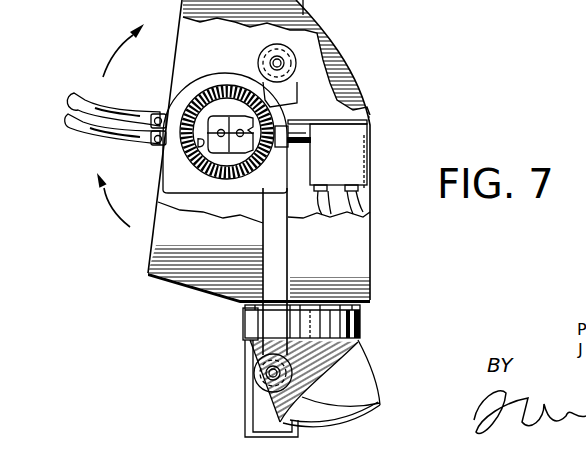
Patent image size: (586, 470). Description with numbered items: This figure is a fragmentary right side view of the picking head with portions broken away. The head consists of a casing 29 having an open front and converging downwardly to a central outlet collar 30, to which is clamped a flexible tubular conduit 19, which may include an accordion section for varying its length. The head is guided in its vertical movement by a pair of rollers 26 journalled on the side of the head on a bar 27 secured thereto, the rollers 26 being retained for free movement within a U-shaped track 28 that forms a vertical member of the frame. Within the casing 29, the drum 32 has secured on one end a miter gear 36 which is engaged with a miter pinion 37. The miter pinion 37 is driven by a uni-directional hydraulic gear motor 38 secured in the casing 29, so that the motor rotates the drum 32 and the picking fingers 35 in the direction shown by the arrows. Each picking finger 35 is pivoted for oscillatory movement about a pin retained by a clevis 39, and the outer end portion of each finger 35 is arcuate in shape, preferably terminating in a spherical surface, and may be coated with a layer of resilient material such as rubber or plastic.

The flexible tubular conduit 19 is at (380, 393).
The rollers 26 is at (266, 48).
The bars 27 is at (285, 272).
The U-shaped tracks 28 is at (246, 416).
The casing 29 is at (310, 25).
The central outlet collar 30 is at (358, 328).
The drum 32 is at (218, 73).
The picking fingers 35 is at (97, 107).
The miter gear 36 is at (186, 150).
The miter pinion 37 is at (275, 152).
The uni-directional hydraulic gear motor 38 is at (348, 161).
The clevis 39 is at (161, 114).